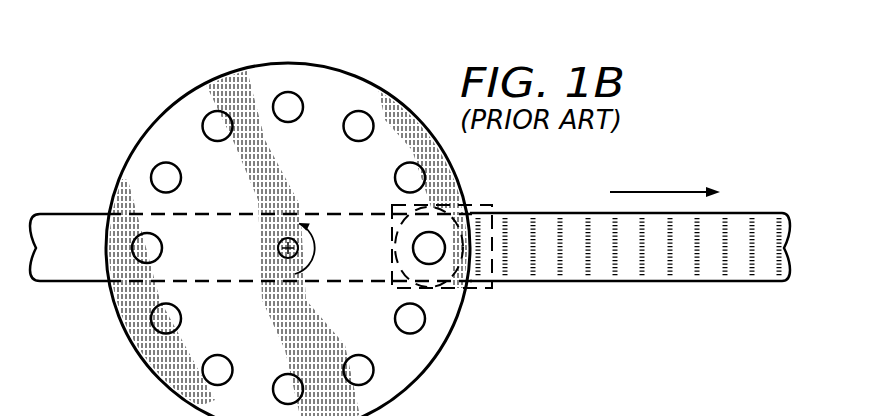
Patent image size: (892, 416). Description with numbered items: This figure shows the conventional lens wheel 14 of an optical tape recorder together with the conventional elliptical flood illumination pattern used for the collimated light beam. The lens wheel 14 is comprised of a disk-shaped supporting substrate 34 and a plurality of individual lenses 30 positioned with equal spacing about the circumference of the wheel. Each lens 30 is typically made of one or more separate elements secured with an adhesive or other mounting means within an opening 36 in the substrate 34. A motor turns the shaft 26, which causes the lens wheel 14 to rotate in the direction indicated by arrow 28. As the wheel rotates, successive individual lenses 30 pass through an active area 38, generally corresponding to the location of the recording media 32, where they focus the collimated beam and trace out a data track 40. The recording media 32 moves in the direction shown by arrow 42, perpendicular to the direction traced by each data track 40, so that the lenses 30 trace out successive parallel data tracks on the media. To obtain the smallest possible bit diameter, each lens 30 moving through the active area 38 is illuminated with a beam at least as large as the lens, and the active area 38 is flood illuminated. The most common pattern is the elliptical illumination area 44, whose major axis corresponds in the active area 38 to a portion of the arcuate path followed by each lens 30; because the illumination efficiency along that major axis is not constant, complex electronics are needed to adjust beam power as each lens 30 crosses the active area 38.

The lens wheel 14 is at (134, 95).
The shaft 26 is at (288, 237).
The arrow 28 is at (314, 255).
The lenses 30 is at (300, 116).
The recording media 32 is at (549, 213).
The supporting substrate 34 is at (280, 63).
The opening 36 is at (362, 92).
The active area 38 is at (486, 303).
The data track 40 is at (414, 248).
The arrow 42 is at (660, 190).
The elliptical illumination area 44 is at (455, 199).